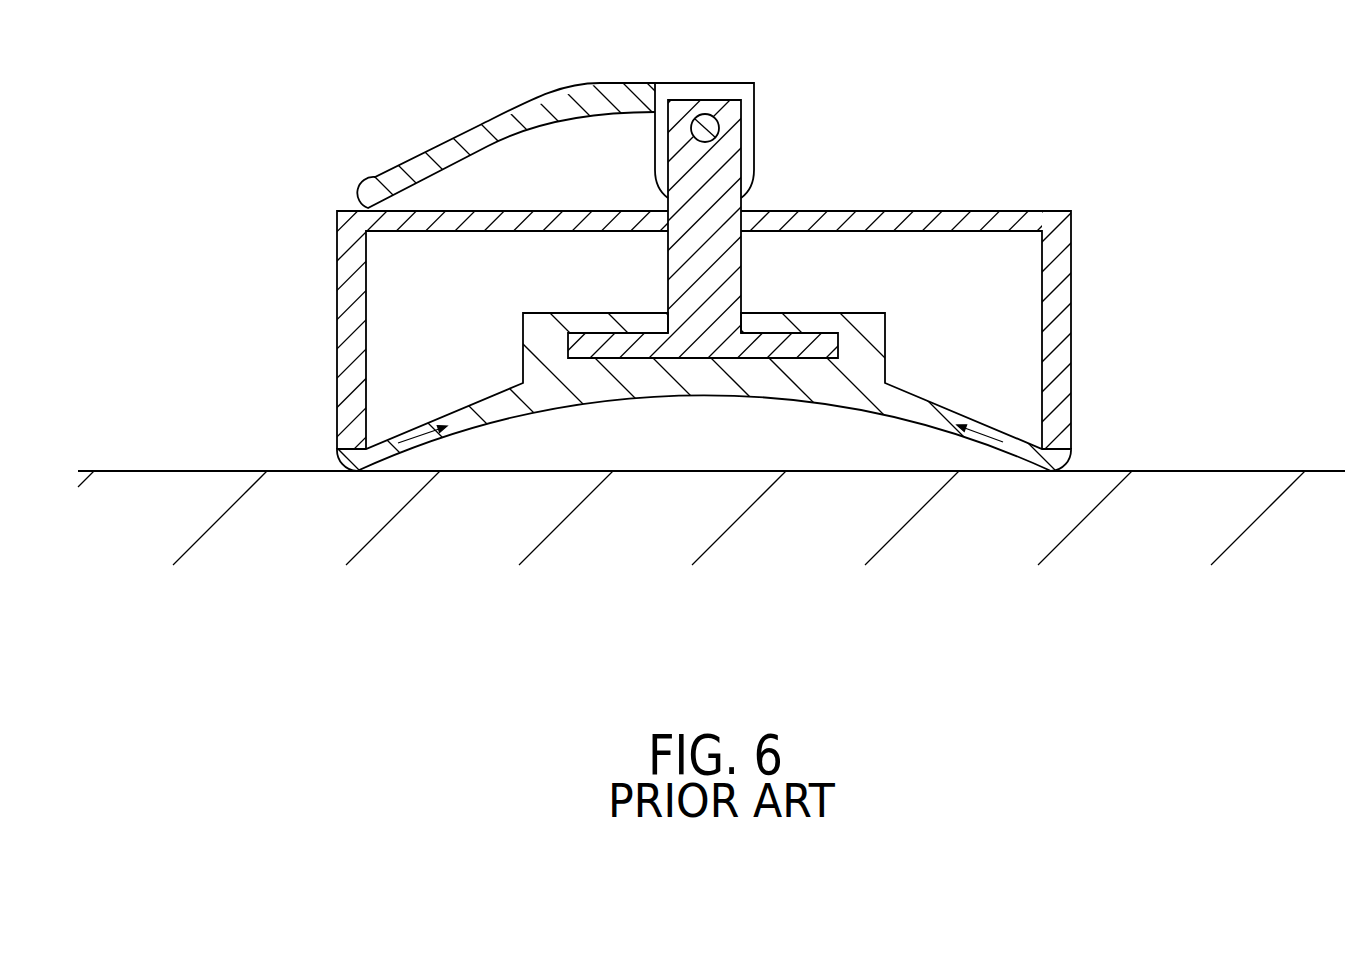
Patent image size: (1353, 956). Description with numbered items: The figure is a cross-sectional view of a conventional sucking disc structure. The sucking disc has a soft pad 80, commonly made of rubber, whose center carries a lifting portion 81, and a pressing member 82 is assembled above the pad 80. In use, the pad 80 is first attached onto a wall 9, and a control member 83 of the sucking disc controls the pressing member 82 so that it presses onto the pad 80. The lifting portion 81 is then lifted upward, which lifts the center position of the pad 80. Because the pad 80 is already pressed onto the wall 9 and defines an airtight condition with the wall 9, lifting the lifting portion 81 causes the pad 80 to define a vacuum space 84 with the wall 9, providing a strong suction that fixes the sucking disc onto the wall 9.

The wall 9 is at (152, 471).
The soft pad 80 is at (899, 398).
The lifting portion 81 is at (756, 211).
The pressing member 82 is at (970, 222).
The control member 83 is at (525, 107).
The vacuum space 84 is at (815, 438).